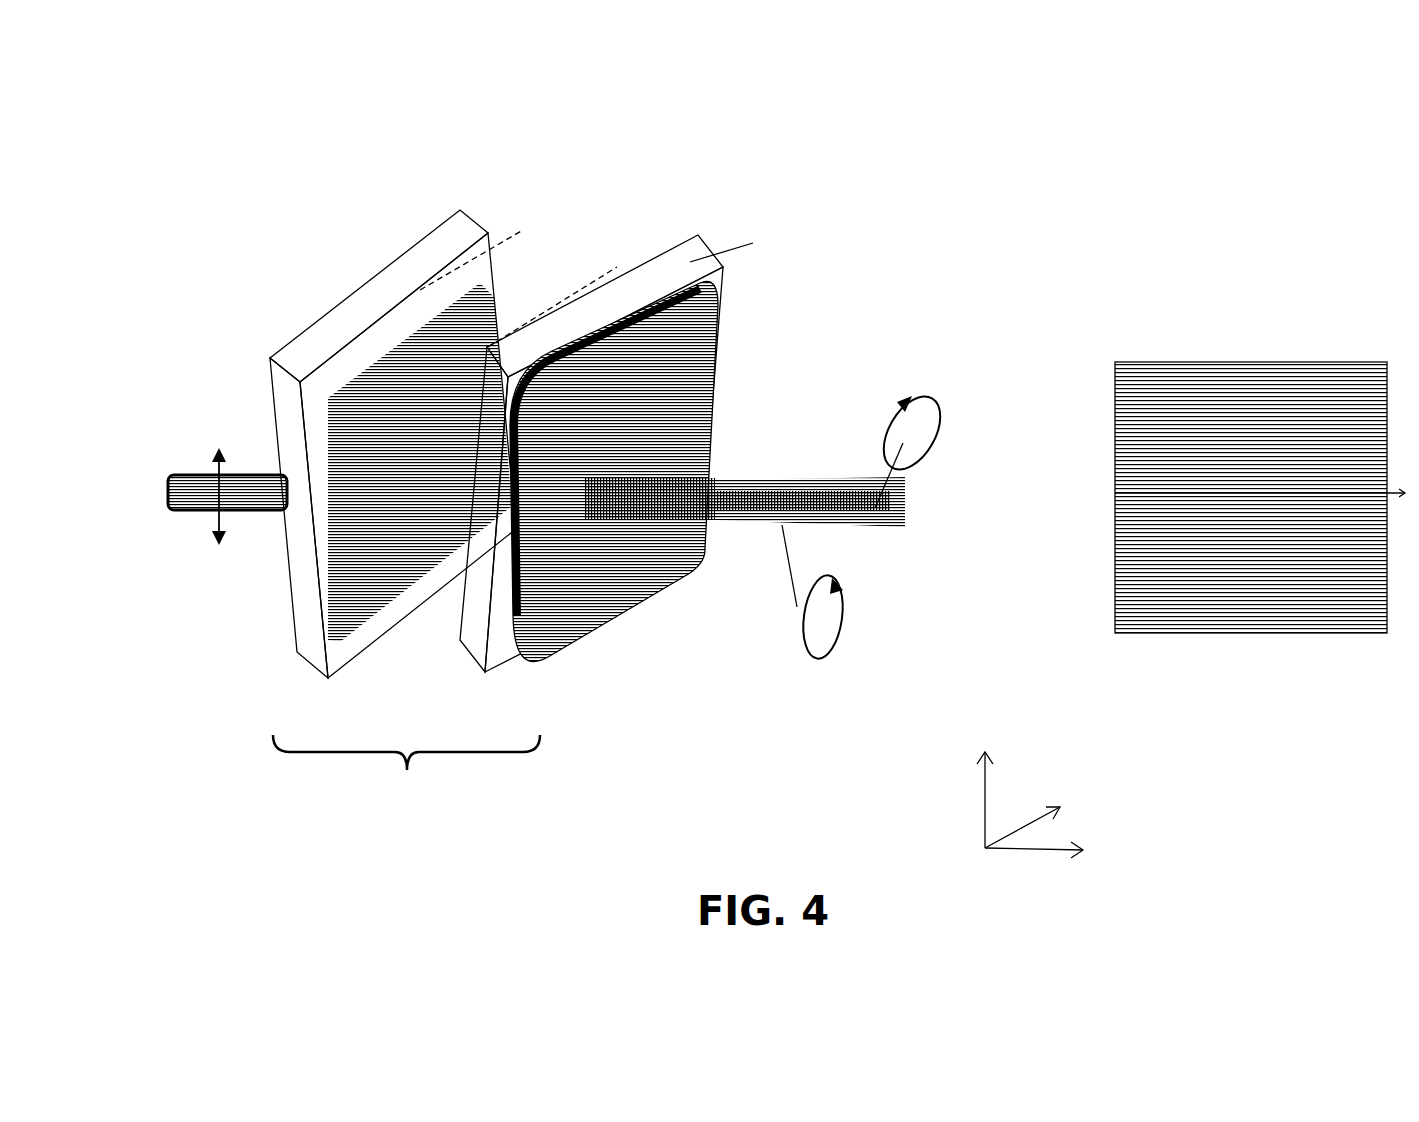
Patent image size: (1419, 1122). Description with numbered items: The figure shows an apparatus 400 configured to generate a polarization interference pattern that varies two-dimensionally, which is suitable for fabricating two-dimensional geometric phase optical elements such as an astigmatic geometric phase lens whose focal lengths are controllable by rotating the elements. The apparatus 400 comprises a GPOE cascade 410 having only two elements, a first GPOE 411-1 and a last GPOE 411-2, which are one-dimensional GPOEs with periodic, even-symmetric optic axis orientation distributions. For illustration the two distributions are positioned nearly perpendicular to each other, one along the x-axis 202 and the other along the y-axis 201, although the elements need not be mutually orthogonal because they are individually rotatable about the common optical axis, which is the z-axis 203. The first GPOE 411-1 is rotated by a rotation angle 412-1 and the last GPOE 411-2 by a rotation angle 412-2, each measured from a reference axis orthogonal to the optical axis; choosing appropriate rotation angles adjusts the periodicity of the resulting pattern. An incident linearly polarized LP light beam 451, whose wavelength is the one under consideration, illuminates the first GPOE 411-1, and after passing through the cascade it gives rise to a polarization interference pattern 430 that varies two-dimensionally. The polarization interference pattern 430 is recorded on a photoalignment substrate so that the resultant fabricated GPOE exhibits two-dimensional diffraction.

The apparatus 400 is at (202, 143).
The GPOE cascade 410 is at (580, 458).
The first GPOE 411-1 is at (393, 426).
The last GPOE 411-2 is at (675, 407).
The rotation angle φ1 412-1 is at (522, 214).
The rotation angle φ2 412-2 is at (621, 268).
The LP light beam 451 is at (222, 482).
The polarization interference pattern 430 is at (1266, 543).
The y-axis 201 is at (945, 784).
The x-axis 202 is at (1037, 805).
The z-axis 203 is at (1047, 875).